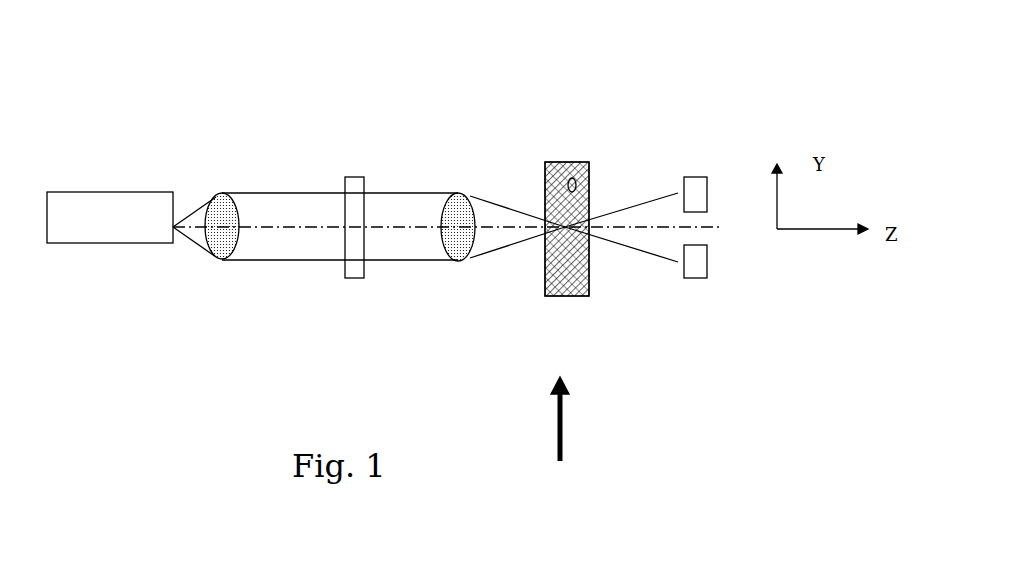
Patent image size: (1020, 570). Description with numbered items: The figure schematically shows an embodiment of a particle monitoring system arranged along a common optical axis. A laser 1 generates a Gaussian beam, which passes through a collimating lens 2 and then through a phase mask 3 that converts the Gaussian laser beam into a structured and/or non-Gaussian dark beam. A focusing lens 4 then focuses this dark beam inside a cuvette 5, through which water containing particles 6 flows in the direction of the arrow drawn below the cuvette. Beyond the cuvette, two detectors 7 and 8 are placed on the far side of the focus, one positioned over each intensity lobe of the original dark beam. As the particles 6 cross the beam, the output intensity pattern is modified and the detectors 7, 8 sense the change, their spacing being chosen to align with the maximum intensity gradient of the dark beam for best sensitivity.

The laser 1 is at (116, 192).
The collimating lens 2 is at (228, 230).
The phase mask 3 is at (282, 159).
The focusing lens 4 is at (455, 193).
The cuvette 5 is at (534, 301).
The particles 6 is at (572, 185).
The detector 7 is at (751, 119).
The detector 8 is at (770, 303).